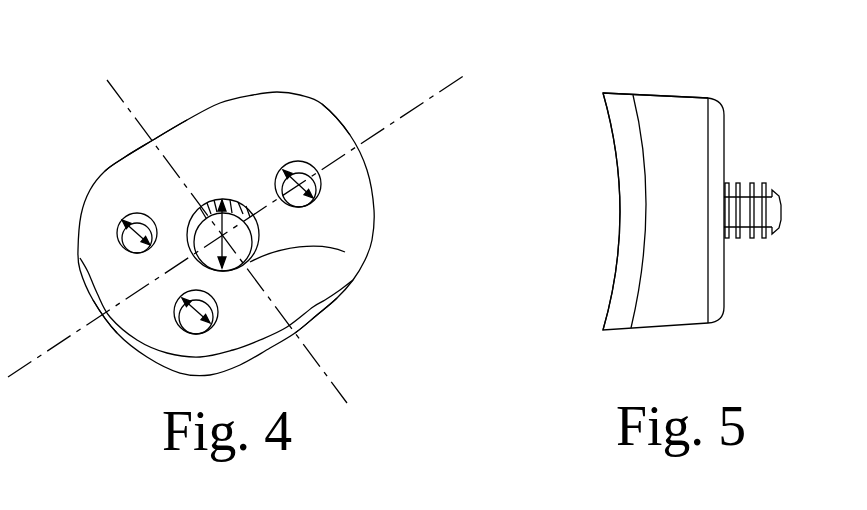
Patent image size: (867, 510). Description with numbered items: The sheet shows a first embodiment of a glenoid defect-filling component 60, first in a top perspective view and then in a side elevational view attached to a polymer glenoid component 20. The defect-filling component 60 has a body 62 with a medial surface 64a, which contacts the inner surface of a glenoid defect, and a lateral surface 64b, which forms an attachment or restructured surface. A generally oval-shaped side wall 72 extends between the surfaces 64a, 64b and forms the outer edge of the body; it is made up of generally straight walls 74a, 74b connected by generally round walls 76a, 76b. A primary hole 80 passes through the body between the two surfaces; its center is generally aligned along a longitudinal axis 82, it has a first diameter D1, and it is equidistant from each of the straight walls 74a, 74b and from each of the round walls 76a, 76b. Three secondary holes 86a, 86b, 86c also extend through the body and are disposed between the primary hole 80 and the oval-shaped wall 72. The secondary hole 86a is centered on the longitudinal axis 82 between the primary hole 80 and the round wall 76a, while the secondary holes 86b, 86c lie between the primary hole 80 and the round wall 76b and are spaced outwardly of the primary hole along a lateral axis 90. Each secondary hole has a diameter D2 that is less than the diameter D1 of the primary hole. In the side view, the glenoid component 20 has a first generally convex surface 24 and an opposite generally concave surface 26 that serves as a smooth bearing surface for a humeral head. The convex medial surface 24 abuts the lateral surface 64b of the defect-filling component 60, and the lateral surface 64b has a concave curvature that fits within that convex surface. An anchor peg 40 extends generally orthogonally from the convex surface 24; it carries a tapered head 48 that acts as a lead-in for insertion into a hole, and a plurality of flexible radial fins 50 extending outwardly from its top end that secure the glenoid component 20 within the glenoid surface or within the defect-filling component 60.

In FIG. 5, the glenoid component 20 is at (679, 231).
In FIG. 5, the convex surface 24 is at (638, 117).
In FIG. 5, the concave surface 26 is at (610, 127).
In FIG. 5, the anchor peg 40 is at (786, 177).
In FIG. 5, the tapered head 48 is at (779, 208).
In FIG. 5, the flexible radial fins 50 is at (727, 183).
In FIG. 4, the glenoid defect-filling component 60 is at (267, 245).
In FIG. 5, the glenoid defect-filling component 60 is at (669, 231).
In FIG. 4, the body 62 is at (353, 223).
In FIG. 4, the medial surface 64a is at (328, 303).
In FIG. 5, the medial surface 64a is at (726, 273).
In FIG. 4, the lateral surface 64b is at (120, 172).
In FIG. 5, the lateral surface 64b is at (645, 205).
In FIG. 4, the side wall 72 is at (312, 318).
In FIG. 4, the straight wall 74a is at (167, 130).
In FIG. 4, the straight wall 74b is at (317, 309).
In FIG. 4, the round wall 76a is at (350, 127).
In FIG. 4, the round wall 76b is at (113, 330).
In FIG. 4, the primary hole 80 is at (345, 252).
In FIG. 4, the longitudinal axis 82 is at (450, 88).
In FIG. 4, the secondary hole 86a is at (320, 176).
In FIG. 4, the secondary hole 86b is at (118, 238).
In FIG. 4, the secondary hole 86c is at (188, 322).
In FIG. 4, the lateral axis 90 is at (337, 390).
In FIG. 4, the first diameter D1 is at (225, 197).
In FIG. 4, the diameter of secondary holes D2 is at (133, 212).